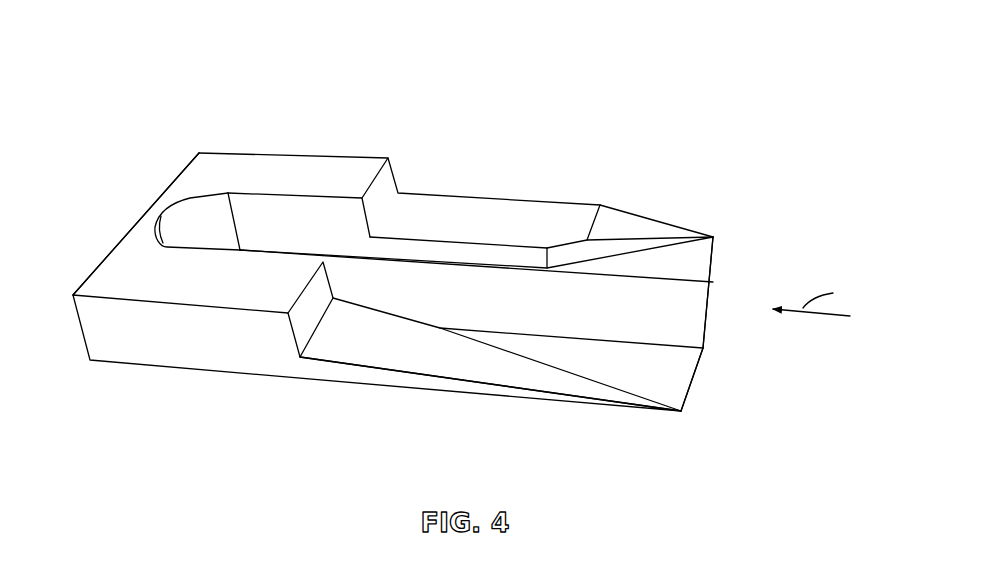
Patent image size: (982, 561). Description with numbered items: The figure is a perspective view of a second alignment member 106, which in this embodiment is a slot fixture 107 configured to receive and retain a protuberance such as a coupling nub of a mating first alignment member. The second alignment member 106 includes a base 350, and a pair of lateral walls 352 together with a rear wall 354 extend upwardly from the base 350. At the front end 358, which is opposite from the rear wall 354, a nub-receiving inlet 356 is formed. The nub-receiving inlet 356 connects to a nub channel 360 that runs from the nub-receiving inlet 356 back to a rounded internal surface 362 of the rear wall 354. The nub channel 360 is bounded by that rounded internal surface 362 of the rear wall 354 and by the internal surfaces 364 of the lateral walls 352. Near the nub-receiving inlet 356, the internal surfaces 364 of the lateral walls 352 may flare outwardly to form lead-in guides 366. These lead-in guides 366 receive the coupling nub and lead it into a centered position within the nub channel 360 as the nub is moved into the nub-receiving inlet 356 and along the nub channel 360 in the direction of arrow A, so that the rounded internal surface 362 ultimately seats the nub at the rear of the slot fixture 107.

The second alignment member 106 is at (150, 63).
The slot fixture 107 is at (753, 240).
The base 350 is at (245, 377).
The lateral walls 352 is at (295, 150).
The rear wall 354 is at (107, 258).
The nub-receiving inlet 356 is at (692, 307).
The front end 358 is at (690, 380).
The nub channel 360 is at (592, 304).
The rounded internal surface 362 is at (172, 222).
The internal surfaces 364 is at (400, 248).
The lead-in guides 366 is at (668, 247).